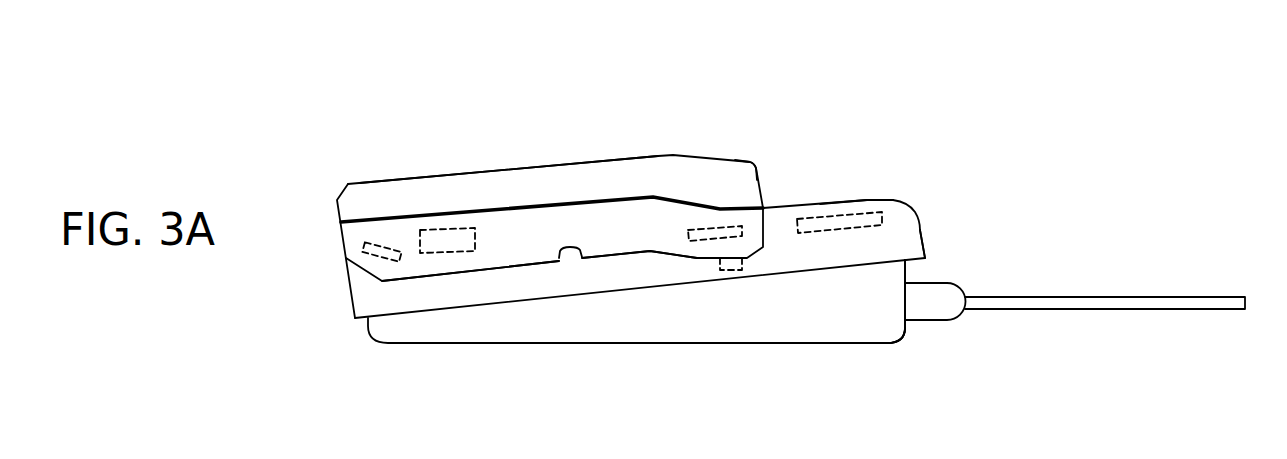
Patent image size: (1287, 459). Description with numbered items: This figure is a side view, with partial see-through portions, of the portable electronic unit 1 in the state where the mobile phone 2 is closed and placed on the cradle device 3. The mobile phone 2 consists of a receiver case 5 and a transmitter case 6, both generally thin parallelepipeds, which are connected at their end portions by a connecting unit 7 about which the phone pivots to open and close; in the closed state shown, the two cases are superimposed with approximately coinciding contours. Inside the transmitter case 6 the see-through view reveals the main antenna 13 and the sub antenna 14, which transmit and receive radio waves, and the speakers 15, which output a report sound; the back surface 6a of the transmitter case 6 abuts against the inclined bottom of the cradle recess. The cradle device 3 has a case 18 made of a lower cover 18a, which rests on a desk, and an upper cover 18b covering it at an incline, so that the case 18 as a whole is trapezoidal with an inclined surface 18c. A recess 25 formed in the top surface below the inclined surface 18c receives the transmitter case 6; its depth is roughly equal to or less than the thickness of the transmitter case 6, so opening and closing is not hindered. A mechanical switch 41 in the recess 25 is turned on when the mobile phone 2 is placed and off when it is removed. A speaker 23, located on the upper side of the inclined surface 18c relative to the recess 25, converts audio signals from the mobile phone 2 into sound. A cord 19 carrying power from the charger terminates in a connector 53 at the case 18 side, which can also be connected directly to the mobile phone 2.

The portable electronic unit 1 is at (914, 54).
The mobile phone 2 is at (468, 178).
The cradle device 3 is at (517, 330).
The receiver case 5 is at (403, 184).
The transmitter case 6 is at (415, 262).
The display bottom surface 6a is at (637, 255).
The connecting unit 7 is at (753, 161).
The main antenna 13 is at (378, 258).
The sub antenna 14 is at (455, 253).
The speakers 15 is at (702, 241).
The case 18 is at (837, 335).
The lower cover 18a is at (893, 333).
The upper cover 18b is at (916, 233).
The inclined surface 18c is at (888, 198).
The cord 19 is at (1100, 297).
The speaker 23 is at (837, 212).
The recess 25 is at (582, 257).
The mechanical switch 41 is at (735, 273).
The connector 53 is at (955, 310).